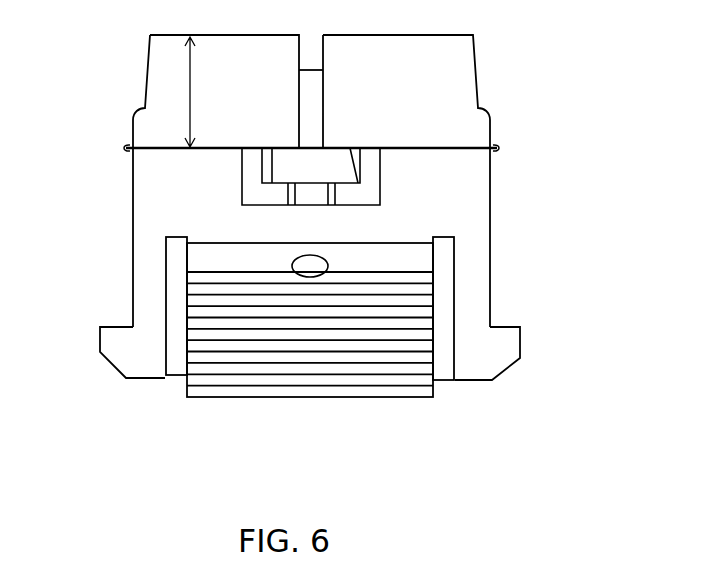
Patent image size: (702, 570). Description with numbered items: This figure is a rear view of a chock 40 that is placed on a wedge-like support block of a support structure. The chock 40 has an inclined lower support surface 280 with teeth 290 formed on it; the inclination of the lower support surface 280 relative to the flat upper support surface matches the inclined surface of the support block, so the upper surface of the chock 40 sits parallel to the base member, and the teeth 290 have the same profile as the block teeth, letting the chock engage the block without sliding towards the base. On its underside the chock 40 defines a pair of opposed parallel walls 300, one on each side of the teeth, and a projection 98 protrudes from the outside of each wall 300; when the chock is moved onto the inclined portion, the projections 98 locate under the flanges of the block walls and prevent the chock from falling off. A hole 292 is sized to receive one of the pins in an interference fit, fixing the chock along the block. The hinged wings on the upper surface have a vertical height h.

The chock 40 is at (528, 87).
The projection 98 is at (118, 347).
The opposed parallel walls 300 is at (162, 352).
The inclined lower support surface 280 is at (388, 375).
The teeth 290 is at (210, 355).
The hole 292 is at (312, 268).